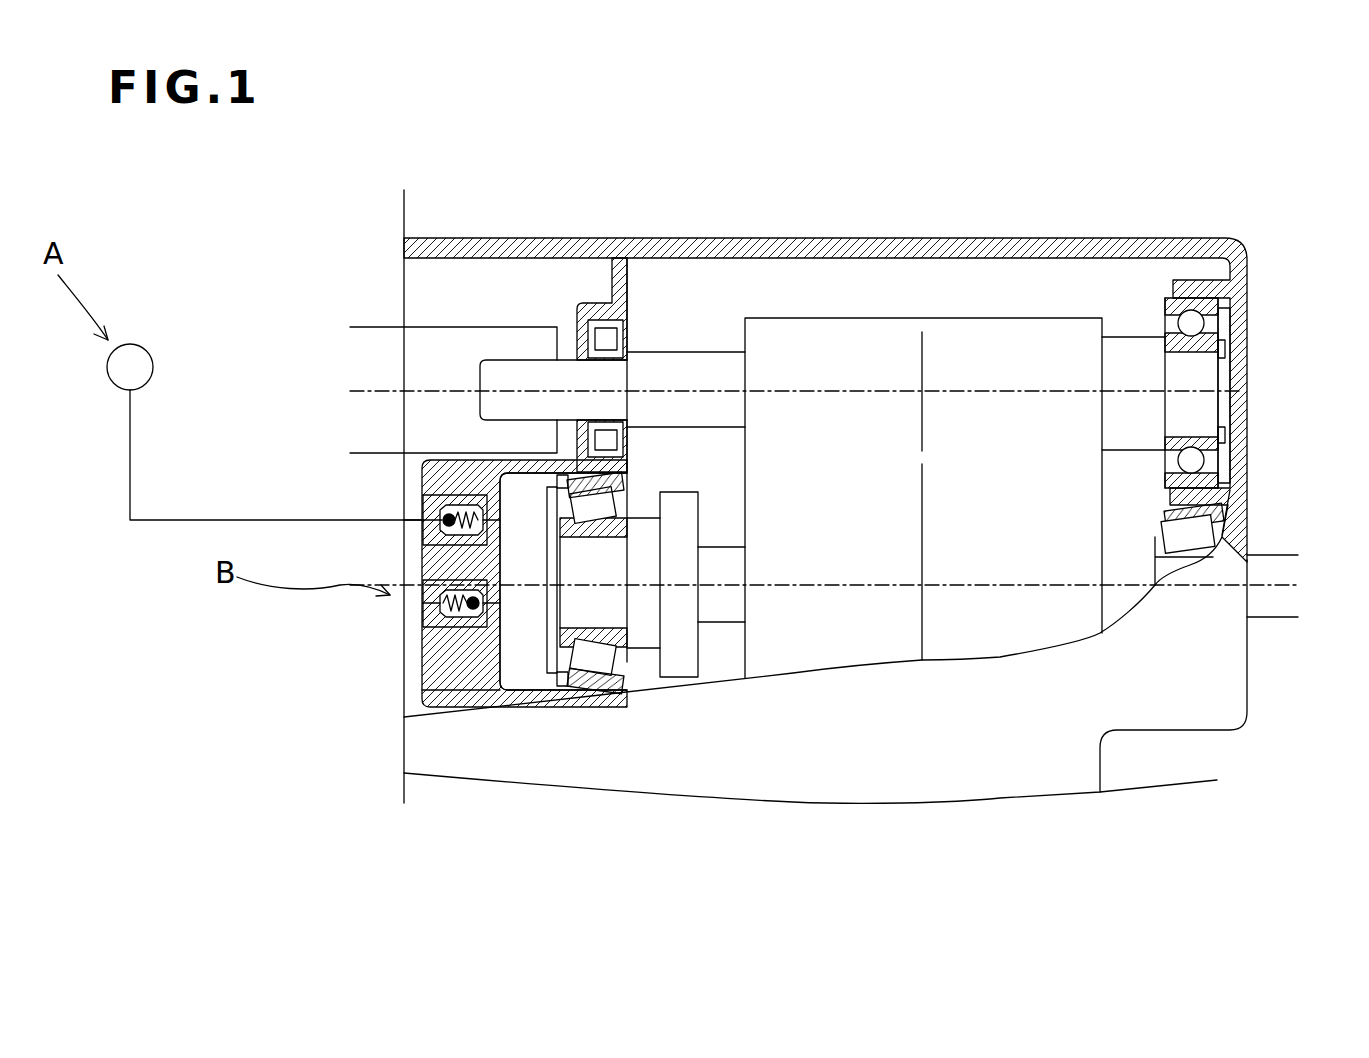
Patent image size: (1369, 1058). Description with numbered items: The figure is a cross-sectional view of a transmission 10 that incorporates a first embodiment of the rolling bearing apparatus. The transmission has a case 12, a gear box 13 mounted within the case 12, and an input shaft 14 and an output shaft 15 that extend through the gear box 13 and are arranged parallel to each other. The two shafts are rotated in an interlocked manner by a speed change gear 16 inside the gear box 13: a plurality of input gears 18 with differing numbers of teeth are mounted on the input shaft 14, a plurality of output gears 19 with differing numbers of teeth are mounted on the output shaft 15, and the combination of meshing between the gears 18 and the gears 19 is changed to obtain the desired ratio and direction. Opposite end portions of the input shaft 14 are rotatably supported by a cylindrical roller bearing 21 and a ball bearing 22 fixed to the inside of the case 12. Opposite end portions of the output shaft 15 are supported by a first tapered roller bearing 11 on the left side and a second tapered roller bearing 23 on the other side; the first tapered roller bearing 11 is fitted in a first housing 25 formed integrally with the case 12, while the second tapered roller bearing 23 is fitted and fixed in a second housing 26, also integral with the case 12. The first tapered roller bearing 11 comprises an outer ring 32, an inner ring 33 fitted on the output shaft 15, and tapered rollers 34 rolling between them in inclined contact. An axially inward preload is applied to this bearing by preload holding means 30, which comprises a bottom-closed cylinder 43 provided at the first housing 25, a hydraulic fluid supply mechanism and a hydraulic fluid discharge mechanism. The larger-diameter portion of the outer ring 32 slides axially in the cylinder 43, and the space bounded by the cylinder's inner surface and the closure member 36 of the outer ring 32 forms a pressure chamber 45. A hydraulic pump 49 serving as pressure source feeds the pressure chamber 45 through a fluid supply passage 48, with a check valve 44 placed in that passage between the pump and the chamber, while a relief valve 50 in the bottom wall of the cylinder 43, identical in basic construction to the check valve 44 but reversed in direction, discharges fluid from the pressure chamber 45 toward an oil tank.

The electric motor 10 is at (962, 196).
The first tapered roller bearing 11 is at (622, 678).
The case 12 is at (985, 239).
The gear box 13 is at (852, 317).
The input shaft 14 is at (515, 370).
The output shaft 15 is at (613, 607).
The speed change gear 16 is at (936, 613).
The input gears 18 is at (925, 417).
The output gears 19 is at (925, 525).
The cylindrical roller bearing 21 is at (634, 336).
The ball bearing 22 is at (1160, 318).
The second tapered roller bearing 23 is at (1220, 540).
The first housing 25 is at (488, 452).
The second housing 26 is at (1250, 488).
The preload holding means 30 is at (409, 488).
The outer ring 32 is at (597, 477).
The inner ring 33 is at (572, 670).
The tapered rollers 34 is at (600, 505).
The closure member 36 is at (537, 623).
The cylinder 43 is at (488, 700).
The check valve 44 is at (425, 500).
The pressure chamber 45 is at (483, 667).
The fluid supply passage 48 is at (128, 440).
The hydraulic pump 49 is at (147, 345).
The relief valve 50 is at (428, 595).